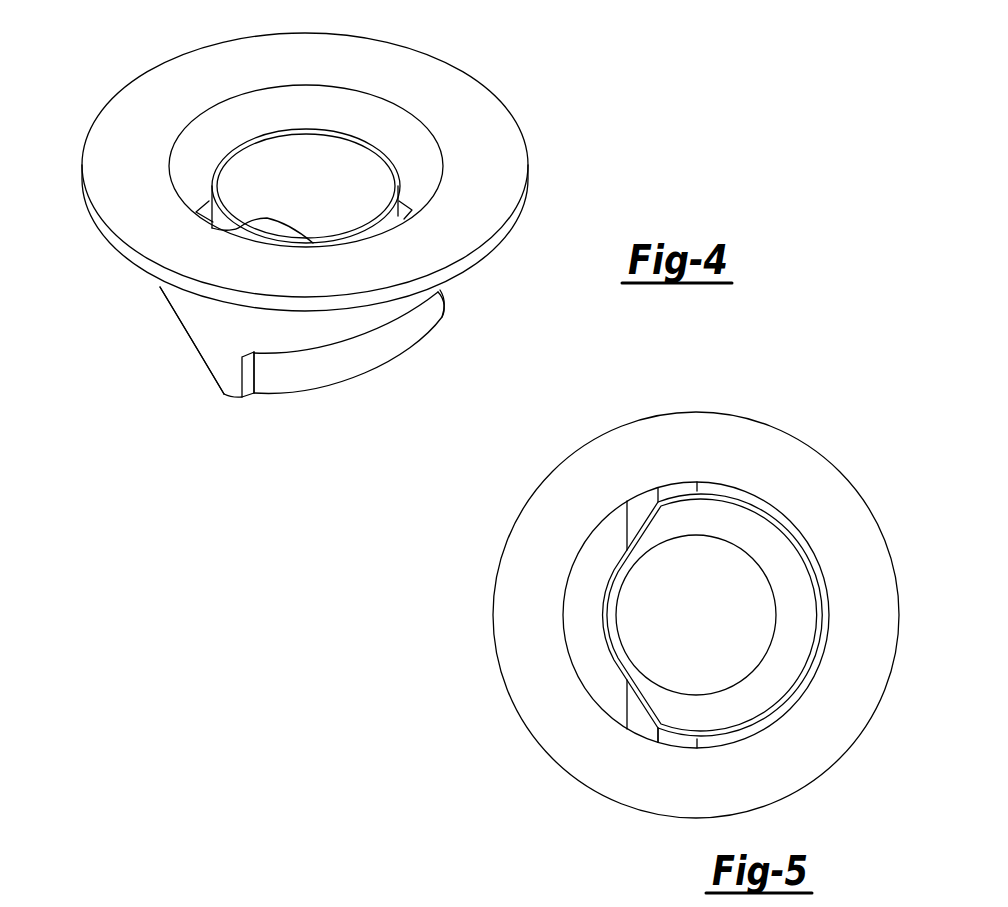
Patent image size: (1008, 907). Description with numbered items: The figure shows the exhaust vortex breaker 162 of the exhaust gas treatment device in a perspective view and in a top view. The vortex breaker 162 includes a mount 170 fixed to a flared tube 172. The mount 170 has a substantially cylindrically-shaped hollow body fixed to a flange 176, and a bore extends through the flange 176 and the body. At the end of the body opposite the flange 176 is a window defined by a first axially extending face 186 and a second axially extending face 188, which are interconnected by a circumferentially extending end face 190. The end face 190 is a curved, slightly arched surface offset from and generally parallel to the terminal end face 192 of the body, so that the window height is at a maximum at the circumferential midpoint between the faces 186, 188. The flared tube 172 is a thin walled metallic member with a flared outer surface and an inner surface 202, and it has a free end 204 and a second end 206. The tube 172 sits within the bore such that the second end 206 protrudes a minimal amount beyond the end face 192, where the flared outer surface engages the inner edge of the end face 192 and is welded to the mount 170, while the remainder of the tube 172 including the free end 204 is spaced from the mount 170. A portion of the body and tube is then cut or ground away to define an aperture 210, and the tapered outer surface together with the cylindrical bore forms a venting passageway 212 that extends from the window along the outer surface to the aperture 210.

In FIG. 4, the vortex breaker 162 is at (141, 63).
In FIG. 5, the vortex breaker 162 is at (473, 672).
In FIG. 4, the mount 170 is at (153, 293).
In FIG. 4, the flared tube 172 is at (447, 295).
In FIG. 5, the flange 176 is at (840, 498).
In FIG. 4, the first axially extending face 186 is at (250, 377).
In FIG. 5, the first axially extending face 186 is at (700, 492).
In FIG. 5, the second axially extending face 188 is at (710, 740).
In FIG. 4, the circumferentially extending end face 190 is at (377, 332).
In FIG. 4, the terminal end face 192 is at (223, 394).
In FIG. 5, the inner surface 202 is at (808, 602).
In FIG. 4, the free end 204 is at (373, 145).
In FIG. 4, the second end 206 is at (450, 332).
In FIG. 4, the aperture 210 is at (182, 330).
In FIG. 4, the venting passageway 212 is at (262, 360).
In FIG. 5, the venting passageway 212 is at (635, 510).